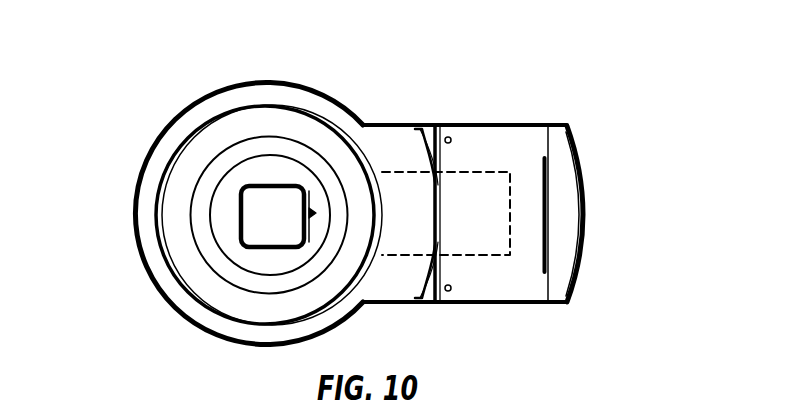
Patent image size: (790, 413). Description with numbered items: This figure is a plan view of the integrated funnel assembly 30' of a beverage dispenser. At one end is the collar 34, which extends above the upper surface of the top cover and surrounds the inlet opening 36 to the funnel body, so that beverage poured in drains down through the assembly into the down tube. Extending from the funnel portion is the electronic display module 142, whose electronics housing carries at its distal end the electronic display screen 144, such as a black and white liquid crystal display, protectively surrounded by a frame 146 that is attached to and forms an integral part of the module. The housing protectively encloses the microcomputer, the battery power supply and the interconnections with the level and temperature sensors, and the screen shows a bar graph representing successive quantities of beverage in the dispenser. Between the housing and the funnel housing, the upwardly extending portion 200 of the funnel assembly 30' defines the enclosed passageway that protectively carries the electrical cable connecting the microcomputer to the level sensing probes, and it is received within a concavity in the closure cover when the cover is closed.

The integrated funnel assembly 30' is at (351, 190).
The collar 34 is at (210, 177).
The inlet opening 36 is at (253, 232).
The electronic display module 142 is at (479, 120).
The electronic display screen 144 is at (560, 208).
The frame 146 is at (578, 158).
The upwardly extending portion 200 is at (492, 293).